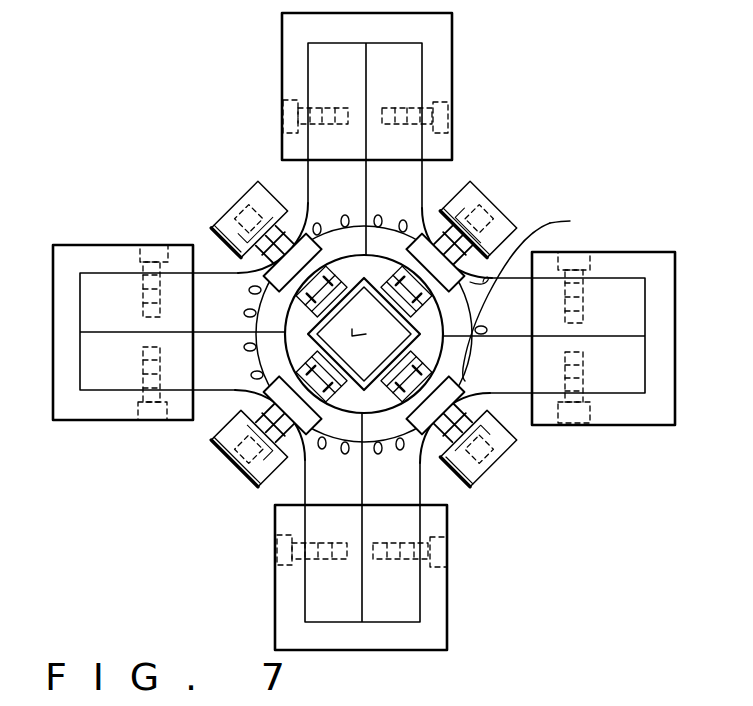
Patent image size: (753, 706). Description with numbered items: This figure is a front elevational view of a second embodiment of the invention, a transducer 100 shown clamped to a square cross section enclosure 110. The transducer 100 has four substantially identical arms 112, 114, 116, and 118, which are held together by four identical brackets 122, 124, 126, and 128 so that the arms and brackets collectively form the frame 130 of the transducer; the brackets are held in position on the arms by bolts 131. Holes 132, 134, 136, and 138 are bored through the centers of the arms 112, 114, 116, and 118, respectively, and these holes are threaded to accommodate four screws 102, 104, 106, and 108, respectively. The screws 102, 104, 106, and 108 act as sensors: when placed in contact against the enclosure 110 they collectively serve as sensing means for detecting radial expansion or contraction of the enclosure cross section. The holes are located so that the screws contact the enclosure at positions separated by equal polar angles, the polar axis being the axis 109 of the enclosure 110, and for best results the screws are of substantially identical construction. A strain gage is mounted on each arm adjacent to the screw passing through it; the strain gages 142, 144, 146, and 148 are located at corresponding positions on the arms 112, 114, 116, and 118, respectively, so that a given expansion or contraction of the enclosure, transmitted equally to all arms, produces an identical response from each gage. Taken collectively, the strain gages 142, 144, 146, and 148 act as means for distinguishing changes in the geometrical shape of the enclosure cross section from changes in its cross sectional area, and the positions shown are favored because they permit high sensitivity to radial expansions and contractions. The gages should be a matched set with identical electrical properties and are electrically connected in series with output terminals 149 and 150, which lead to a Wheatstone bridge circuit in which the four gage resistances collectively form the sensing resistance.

The transducer 100 is at (177, 88).
The screw 102 is at (463, 185).
The screw 104 is at (243, 192).
The screw 106 is at (243, 460).
The screw 108 is at (497, 460).
The axis 109 is at (364, 334).
The enclosure 110 is at (364, 334).
The arm 112 is at (410, 184).
The arm 114 is at (125, 312).
The arm 116 is at (345, 506).
The arm 118 is at (630, 372).
The bracket 122 is at (398, 40).
The bracket 124 is at (100, 268).
The bracket 126 is at (420, 645).
The bracket 128 is at (660, 276).
The frame 130 is at (424, 186).
The bolts 131 is at (282, 110).
The hole 132 is at (442, 299).
The hole 134 is at (290, 302).
The hole 136 is at (292, 362).
The hole 138 is at (447, 353).
The strain gage 142 is at (432, 240).
The strain gage 144 is at (268, 272).
The strain gage 146 is at (267, 396).
The strain gage 148 is at (465, 381).
The output terminal 149 is at (550, 223).
The output terminal 150 is at (572, 221).